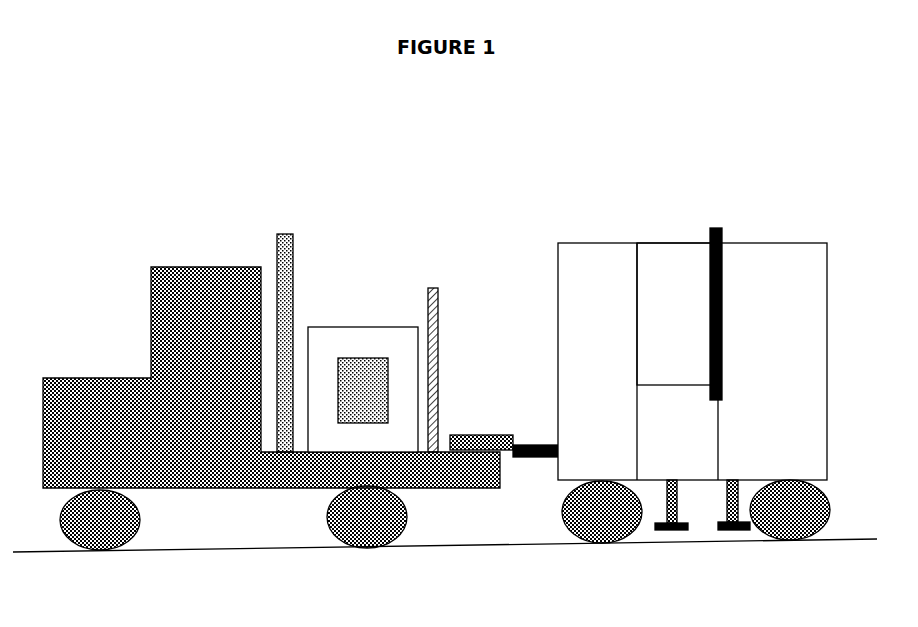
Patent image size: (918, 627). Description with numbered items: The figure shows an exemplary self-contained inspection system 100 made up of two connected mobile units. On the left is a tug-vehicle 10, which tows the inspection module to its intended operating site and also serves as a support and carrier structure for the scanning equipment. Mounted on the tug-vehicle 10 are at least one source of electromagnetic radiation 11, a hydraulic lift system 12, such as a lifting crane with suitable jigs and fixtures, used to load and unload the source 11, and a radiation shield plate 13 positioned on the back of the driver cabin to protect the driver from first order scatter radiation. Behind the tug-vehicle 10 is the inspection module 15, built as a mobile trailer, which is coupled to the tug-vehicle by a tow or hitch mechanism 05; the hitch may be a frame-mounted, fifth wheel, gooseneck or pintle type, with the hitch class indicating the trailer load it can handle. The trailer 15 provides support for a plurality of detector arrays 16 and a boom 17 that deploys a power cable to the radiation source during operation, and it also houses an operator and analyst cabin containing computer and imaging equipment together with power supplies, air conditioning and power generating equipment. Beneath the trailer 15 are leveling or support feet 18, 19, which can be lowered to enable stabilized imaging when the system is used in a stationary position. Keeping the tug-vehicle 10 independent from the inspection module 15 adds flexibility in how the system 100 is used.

The self-contained inspection system 100 is at (189, 144).
The tug-vehicle 10 is at (137, 388).
The source of electromagnetic radiation 11 is at (323, 338).
The hydraulic lift system 12 is at (433, 288).
The radiation shield plate 13 is at (275, 243).
The hitch mechanism 05 is at (530, 460).
The inspection module 15 is at (810, 313).
The detector arrays 16 is at (683, 253).
The boom 17 is at (720, 232).
The leveling or support feet 18 is at (673, 517).
The leveling or support feet 19 is at (742, 530).